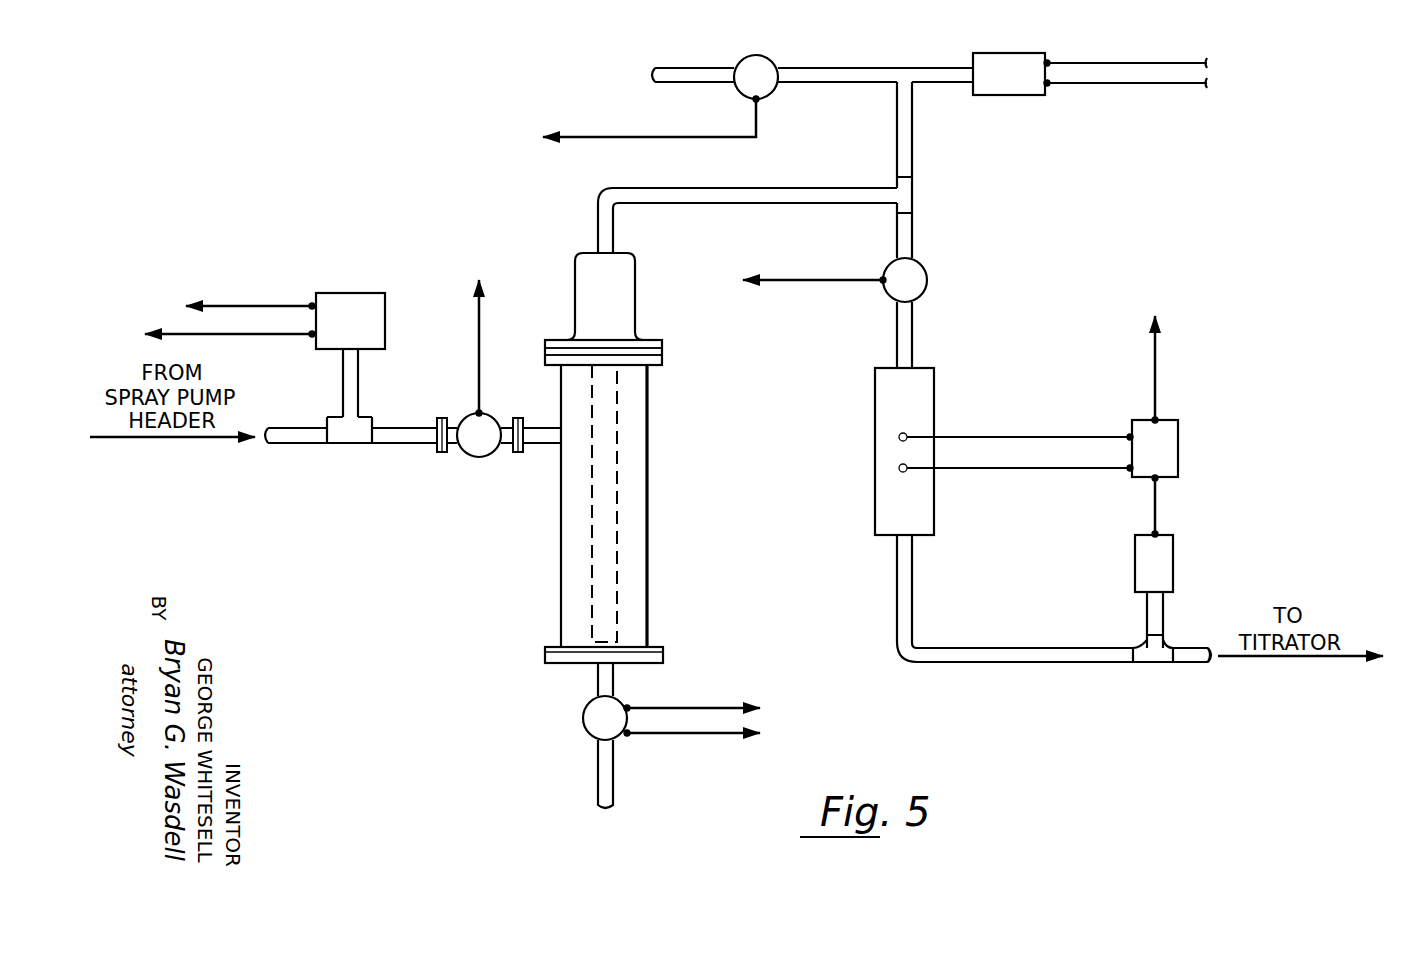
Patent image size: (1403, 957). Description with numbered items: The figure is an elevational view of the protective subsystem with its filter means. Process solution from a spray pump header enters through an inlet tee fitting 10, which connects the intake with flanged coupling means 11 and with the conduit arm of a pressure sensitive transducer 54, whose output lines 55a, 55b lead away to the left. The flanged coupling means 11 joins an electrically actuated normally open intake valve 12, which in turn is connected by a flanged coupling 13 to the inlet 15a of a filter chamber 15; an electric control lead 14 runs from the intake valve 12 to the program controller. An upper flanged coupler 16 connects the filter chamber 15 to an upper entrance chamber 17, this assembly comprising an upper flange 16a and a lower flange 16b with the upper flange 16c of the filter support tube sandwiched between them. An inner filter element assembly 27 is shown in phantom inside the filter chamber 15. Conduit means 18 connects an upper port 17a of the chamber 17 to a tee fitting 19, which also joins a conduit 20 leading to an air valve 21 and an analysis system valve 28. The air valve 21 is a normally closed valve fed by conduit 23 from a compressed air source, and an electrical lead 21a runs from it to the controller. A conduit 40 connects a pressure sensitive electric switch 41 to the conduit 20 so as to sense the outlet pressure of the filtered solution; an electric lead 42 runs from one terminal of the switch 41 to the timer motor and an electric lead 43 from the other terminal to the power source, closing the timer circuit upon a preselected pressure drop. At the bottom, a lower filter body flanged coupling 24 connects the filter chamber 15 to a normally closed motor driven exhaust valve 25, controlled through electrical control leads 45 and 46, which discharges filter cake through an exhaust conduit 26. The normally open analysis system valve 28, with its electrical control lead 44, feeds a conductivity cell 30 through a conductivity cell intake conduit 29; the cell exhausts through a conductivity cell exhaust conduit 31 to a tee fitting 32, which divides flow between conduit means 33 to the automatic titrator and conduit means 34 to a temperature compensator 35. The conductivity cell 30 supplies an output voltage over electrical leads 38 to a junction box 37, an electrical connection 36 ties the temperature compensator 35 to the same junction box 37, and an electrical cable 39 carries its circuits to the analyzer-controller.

The inlet tee fitting 10 is at (347, 443).
The flanged coupling means 11 is at (442, 452).
The intake valve 12 is at (465, 418).
The flanged coupling 13 is at (518, 418).
The electric control lead 14 is at (478, 330).
The filter chamber 15 is at (560, 528).
The inlet 15a is at (555, 443).
The upper flanged coupler 16 is at (545, 343).
The upper flange 16a is at (663, 345).
The lower flange 16b is at (663, 365).
The upper flange of filter support tube 16c is at (663, 353).
The upper entrance chamber 17 is at (574, 288).
The upper port 17a is at (597, 250).
The conduit means 18 is at (742, 204).
The tee fitting 19 is at (913, 195).
The conduit 20 is at (896, 136).
The air valve 21 is at (770, 62).
The electrical lead 21a is at (643, 136).
The conduit 23 is at (688, 67).
The lower filter body flanged coupling 24 is at (545, 652).
The exhaust valve 25 is at (583, 718).
The exhaust conduit 26 is at (597, 780).
The inner filter element assembly 27 is at (618, 490).
The analysis system valve 28 is at (927, 276).
The conductivity cell intake conduit 29 is at (913, 333).
The conductivity cell 30 is at (874, 450).
The conductivity cell exhaust conduit 31 is at (896, 608).
The tee fitting 32 is at (1150, 664).
The conduit means 33 is at (1196, 665).
The conduit means 34 is at (1146, 622).
The temperature compensator 35 is at (1174, 562).
The electrical connection 36 is at (1157, 506).
The junction box 37 is at (1179, 446).
The electrical leads 38 is at (1048, 436).
The electrical cable 39 is at (1157, 366).
The conduit 40 is at (940, 67).
The pressure sensitive electric switch 41 is at (1010, 95).
The electric lead 42 is at (1158, 85).
The electric lead 43 is at (1105, 63).
The electrical control lead 44 is at (815, 279).
The electrical control lead 45 is at (690, 707).
The electrical control lead 46 is at (690, 735).
The pressure sensitive transducer 54 is at (335, 293).
The output line 55a is at (260, 306).
The output line 55b is at (185, 334).